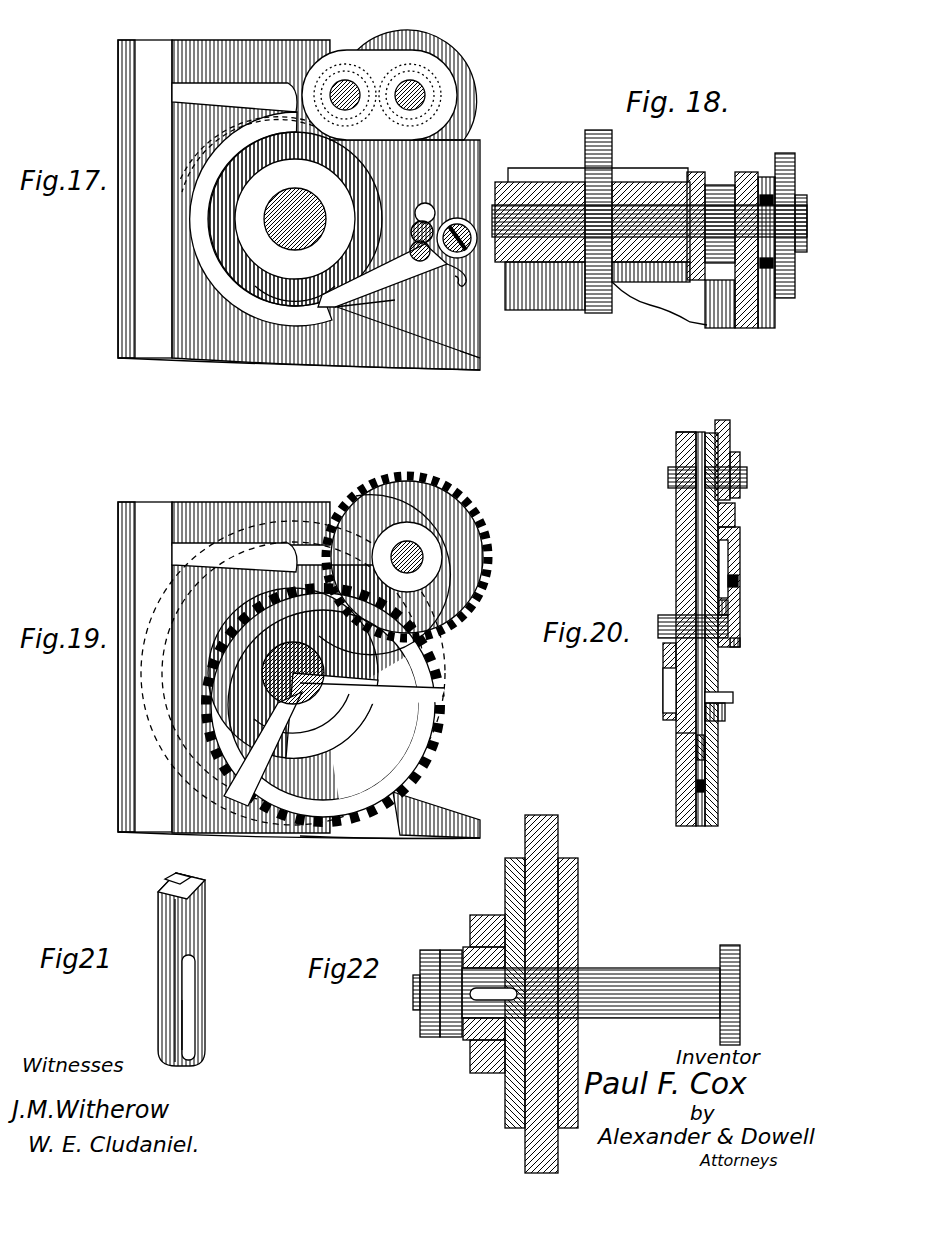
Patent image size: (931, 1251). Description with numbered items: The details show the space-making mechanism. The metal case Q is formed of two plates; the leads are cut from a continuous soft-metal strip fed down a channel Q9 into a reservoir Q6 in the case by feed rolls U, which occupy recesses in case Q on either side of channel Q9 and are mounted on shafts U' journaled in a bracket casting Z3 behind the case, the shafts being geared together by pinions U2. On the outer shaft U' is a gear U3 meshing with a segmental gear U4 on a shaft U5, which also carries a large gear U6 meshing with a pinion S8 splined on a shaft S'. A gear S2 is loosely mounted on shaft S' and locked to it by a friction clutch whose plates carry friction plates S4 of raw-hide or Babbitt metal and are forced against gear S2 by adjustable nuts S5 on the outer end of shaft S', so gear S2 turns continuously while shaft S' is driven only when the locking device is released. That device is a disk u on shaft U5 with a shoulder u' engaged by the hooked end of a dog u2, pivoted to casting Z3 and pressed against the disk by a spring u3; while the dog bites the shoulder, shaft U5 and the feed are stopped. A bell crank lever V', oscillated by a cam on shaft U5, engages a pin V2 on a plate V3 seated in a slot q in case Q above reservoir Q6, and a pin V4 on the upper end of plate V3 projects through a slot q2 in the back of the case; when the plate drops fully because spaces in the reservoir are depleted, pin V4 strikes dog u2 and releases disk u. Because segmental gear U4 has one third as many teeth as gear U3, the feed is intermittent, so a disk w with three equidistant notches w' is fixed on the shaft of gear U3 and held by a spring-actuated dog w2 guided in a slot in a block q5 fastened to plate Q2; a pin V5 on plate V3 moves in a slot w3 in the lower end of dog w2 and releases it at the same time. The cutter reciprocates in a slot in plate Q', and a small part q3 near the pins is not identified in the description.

In FIG. 17, the pinions U2 is at (344, 70).
In FIG. 17, the shafts U' is at (393, 78).
In FIG. 18, the shafts U' is at (649, 195).
In FIG. 19, the shafts U' is at (392, 575).
In FIG. 20, the shafts U' is at (720, 473).
In FIG. 17, the disk w is at (413, 71).
In FIG. 18, the disk w is at (785, 210).
In FIG. 20, the disk w is at (734, 449).
In FIG. 17, the shaft U5 is at (322, 212).
In FIG. 19, the shaft U5 is at (322, 665).
In FIG. 17, the disk u is at (291, 141).
In FIG. 17, the pin q3 is at (427, 205).
In FIG. 17, the pin V4 is at (430, 232).
In FIG. 20, the pin V4 is at (662, 618).
In FIG. 17, the plate V3 is at (446, 224).
In FIG. 20, the plate V3 is at (698, 742).
In FIG. 17, the shoulder u' is at (295, 276).
In FIG. 17, the dog u2 is at (392, 270).
In FIG. 17, the spring u3 is at (398, 302).
In FIG. 21, the spring u3 is at (190, 1021).
In FIG. 17, the case Q is at (309, 205).
In FIG. 18, the case Q is at (648, 258).
In FIG. 19, the case Q is at (304, 670).
In FIG. 20, the case Q is at (726, 629).
In FIG. 17, the plate Q' is at (490, 356).
In FIG. 20, the plate Q' is at (665, 629).
In FIG. 17, the bracket casting Z3 is at (392, 352).
In FIG. 18, the bracket casting Z3 is at (583, 302).
In FIG. 19, the bracket casting Z3 is at (395, 822).
In FIG. 18, the gear U3 is at (612, 153).
In FIG. 19, the gear U3 is at (440, 508).
In FIG. 18, the channel Q9 is at (752, 178).
In FIG. 20, the channel Q9 is at (698, 535).
In FIG. 18, the notches w' is at (787, 236).
In FIG. 20, the notches w' is at (746, 512).
In FIG. 21, the notches w' is at (205, 871).
In FIG. 18, the feed rolls U is at (716, 224).
In FIG. 20, the feed rolls U is at (665, 440).
In FIG. 19, the segmental gear U4 is at (362, 661).
In FIG. 19, the large gear U6 is at (412, 748).
In FIG. 20, the dog w2 is at (740, 560).
In FIG. 21, the dog w2 is at (190, 996).
In FIG. 20, the slot w3 is at (740, 614).
In FIG. 20, the block q5 is at (738, 592).
In FIG. 20, the pin V5 is at (740, 640).
In FIG. 20, the pin V2 is at (733, 690).
In FIG. 20, the bell crank lever V' is at (734, 710).
In FIG. 20, the slot q is at (676, 735).
In FIG. 20, the slot q2 is at (664, 652).
In FIG. 20, the plate Q2 is at (708, 770).
In FIG. 20, the reservoir Q6 is at (696, 795).
In FIG. 22, the gear S2 is at (548, 847).
In FIG. 22, the friction plates S4 is at (516, 884).
In FIG. 22, the pinion S8 is at (483, 936).
In FIG. 22, the shaft S' is at (601, 992).
In FIG. 22, the adjustable nuts S5 is at (440, 1000).